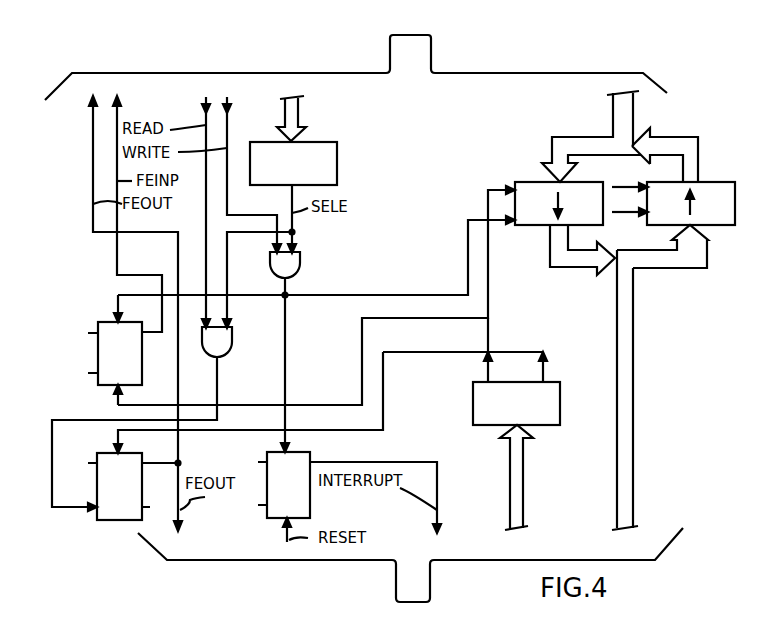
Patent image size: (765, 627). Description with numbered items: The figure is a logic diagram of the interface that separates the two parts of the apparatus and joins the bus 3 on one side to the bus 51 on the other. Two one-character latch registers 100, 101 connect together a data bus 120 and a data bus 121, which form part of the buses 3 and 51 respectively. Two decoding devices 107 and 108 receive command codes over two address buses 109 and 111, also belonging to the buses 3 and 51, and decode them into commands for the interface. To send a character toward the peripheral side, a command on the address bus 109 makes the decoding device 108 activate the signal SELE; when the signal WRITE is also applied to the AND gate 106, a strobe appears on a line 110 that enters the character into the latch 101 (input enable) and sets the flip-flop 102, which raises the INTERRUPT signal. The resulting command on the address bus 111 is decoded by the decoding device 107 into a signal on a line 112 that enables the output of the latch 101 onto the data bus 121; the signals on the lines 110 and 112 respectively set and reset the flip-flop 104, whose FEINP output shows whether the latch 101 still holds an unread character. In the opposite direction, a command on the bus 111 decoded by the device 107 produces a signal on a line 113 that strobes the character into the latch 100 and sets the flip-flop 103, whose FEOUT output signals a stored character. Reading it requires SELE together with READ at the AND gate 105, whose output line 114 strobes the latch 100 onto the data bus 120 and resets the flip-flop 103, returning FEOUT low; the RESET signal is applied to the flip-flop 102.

The bus 3 is at (418, 54).
The bus 51 is at (394, 583).
The latch register 100 is at (715, 232).
The latch register 101 is at (532, 228).
The flip-flop 102 is at (258, 505).
The flip-flop 103 is at (97, 483).
The flip-flop 104 is at (137, 363).
The AND gate 105 is at (226, 348).
The AND gate 106 is at (300, 260).
The decoding device 107 is at (473, 400).
The decoding device 108 is at (338, 164).
The address bus 109 is at (300, 114).
The line 110 is at (334, 295).
The address bus 111 is at (511, 470).
The line 112 is at (486, 346).
The line 113 is at (385, 383).
The output line 114 is at (218, 385).
The data bus 120 is at (620, 121).
The data bus 121 is at (625, 382).